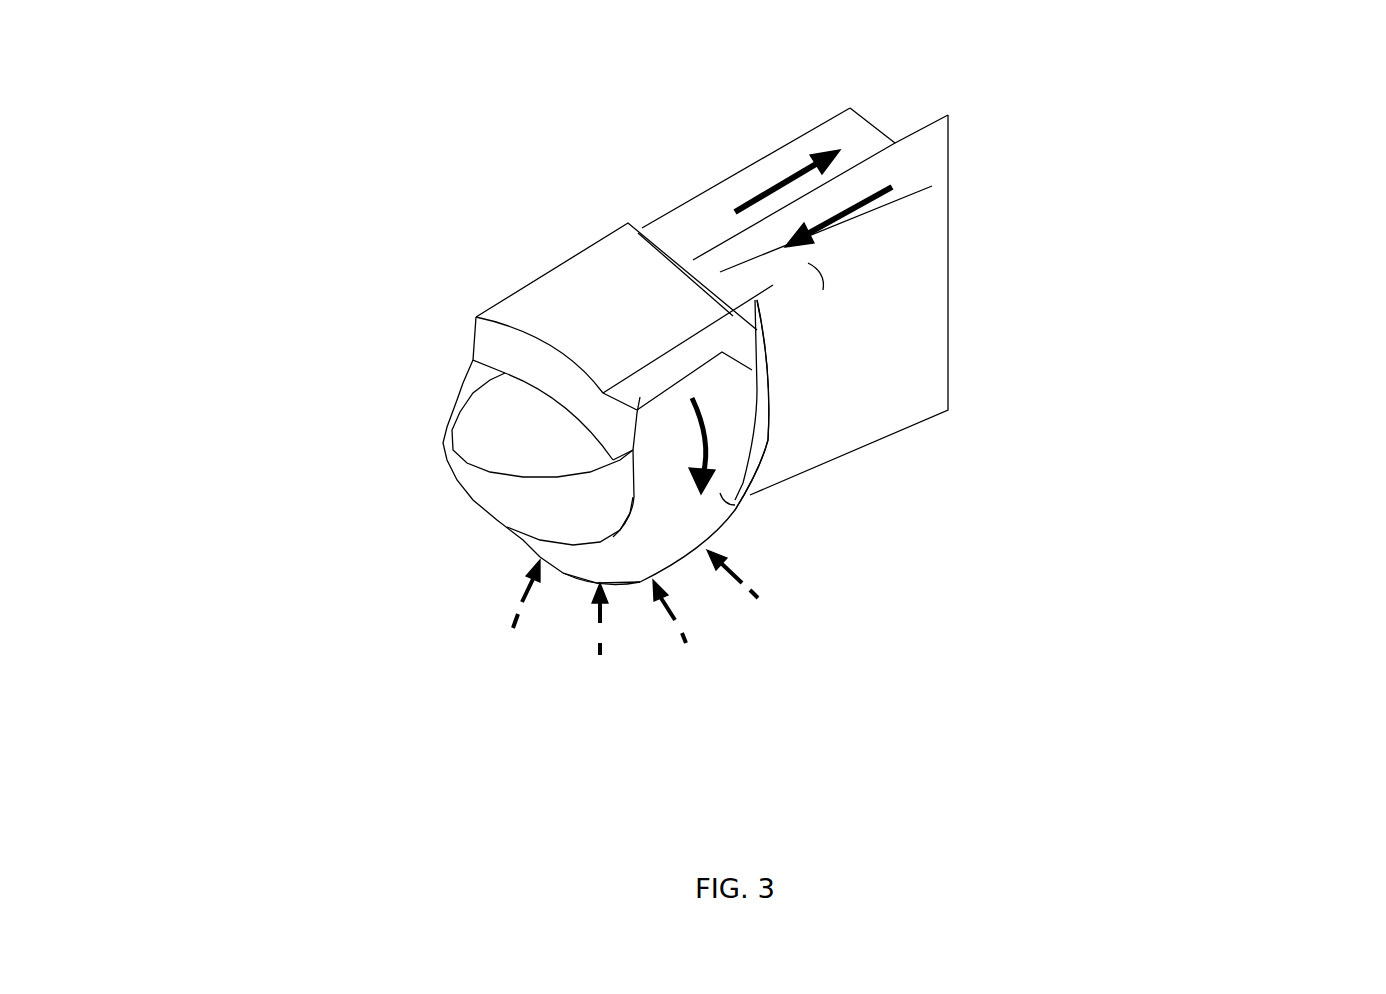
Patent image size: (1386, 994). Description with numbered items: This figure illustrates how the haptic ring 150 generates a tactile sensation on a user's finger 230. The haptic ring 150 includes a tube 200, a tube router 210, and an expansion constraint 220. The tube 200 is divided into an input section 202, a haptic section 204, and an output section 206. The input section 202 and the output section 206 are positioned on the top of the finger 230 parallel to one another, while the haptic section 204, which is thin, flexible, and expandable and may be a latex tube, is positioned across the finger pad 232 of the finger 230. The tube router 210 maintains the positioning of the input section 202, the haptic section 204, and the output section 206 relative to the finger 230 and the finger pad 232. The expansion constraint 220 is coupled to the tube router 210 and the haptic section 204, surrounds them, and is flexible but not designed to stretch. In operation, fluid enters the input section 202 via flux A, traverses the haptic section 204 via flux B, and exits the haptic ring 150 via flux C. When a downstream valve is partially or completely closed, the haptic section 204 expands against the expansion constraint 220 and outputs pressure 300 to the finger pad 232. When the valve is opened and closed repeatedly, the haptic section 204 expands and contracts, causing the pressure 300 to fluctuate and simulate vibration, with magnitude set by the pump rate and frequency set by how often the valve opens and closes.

The haptic ring 150 is at (237, 99).
The tube 200 is at (850, 137).
The input section 202 is at (723, 263).
The haptic section 204 is at (718, 493).
The output section 206 is at (690, 225).
The tube router 210 is at (510, 346).
The expansion constraint 220 is at (763, 433).
The finger 230 is at (310, 533).
The finger pad 232 is at (577, 528).
The pressure 300 is at (783, 557).